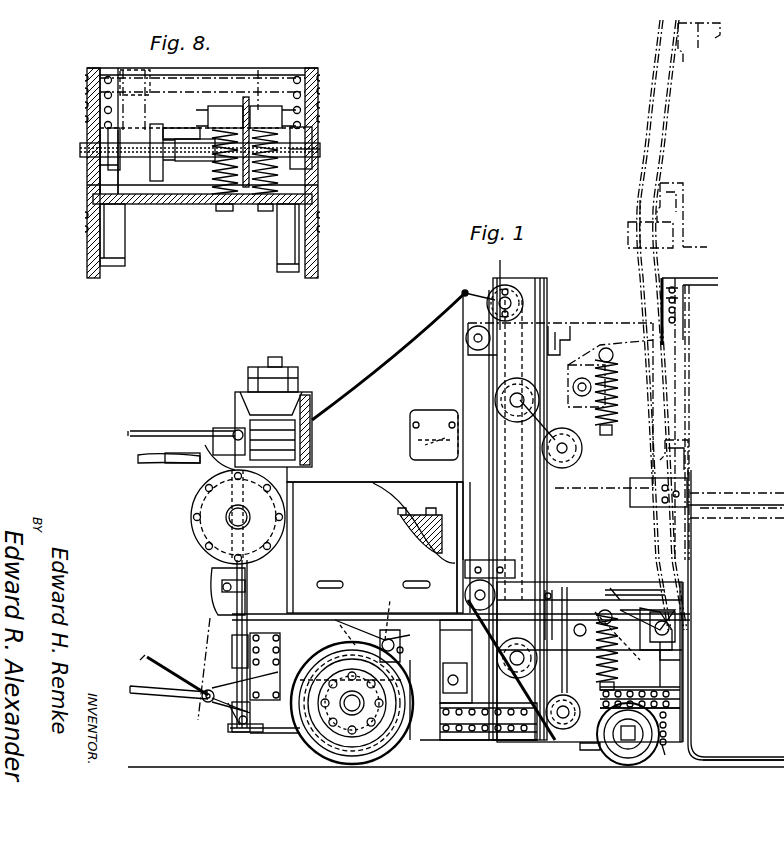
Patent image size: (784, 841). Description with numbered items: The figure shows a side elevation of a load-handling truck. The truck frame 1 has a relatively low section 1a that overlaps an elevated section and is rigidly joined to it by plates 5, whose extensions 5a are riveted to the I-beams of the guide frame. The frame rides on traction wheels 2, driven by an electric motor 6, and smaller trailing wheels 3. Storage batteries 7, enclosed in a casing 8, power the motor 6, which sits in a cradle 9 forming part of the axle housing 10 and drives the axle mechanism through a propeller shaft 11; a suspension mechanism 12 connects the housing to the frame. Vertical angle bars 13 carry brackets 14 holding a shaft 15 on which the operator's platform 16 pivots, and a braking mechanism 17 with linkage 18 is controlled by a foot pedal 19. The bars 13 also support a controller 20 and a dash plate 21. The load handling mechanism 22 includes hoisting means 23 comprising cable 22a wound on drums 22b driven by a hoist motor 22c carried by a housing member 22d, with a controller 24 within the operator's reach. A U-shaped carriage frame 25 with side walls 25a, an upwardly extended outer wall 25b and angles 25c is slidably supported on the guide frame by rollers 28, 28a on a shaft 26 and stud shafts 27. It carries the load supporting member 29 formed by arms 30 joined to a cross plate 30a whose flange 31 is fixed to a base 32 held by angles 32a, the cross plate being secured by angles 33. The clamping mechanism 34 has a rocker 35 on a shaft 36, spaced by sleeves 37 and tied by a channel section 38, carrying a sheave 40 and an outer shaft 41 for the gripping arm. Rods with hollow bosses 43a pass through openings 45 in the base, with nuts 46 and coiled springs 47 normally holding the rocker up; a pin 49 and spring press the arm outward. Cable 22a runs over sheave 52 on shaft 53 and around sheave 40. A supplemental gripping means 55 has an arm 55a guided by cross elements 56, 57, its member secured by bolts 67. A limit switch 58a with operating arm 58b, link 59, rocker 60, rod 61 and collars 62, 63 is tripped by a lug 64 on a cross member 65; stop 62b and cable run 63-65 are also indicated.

In FIG. 1, the frame 1 is at (400, 614).
In FIG. 1, the low frame section 1a is at (478, 748).
In FIG. 1, the traction wheels 2 is at (345, 767).
In FIG. 1, the trailing wheels 3 is at (628, 765).
In FIG. 1, the plates 5 is at (440, 620).
In FIG. 1, the plate extensions 5a is at (520, 565).
In FIG. 1, the motor 6 is at (399, 646).
In FIG. 1, the storage batteries 7 is at (412, 510).
In FIG. 1, the casing 8 is at (374, 495).
In FIG. 1, the cradle 9 is at (409, 709).
In FIG. 1, the axle housing 10 is at (305, 735).
In FIG. 1, the propeller shaft 11 is at (361, 703).
In FIG. 1, the suspension mechanism 12 is at (372, 608).
In FIG. 1, the angle bars 13 is at (290, 590).
In FIG. 1, the brackets 14 is at (265, 710).
In FIG. 1, the shaft 15 is at (203, 703).
In FIG. 1, the platform 16 is at (145, 694).
In FIG. 1, the braking mechanism 17 is at (290, 640).
In FIG. 1, the linkage 18 is at (237, 722).
In FIG. 1, the foot pedal 19 is at (170, 660).
In FIG. 1, the controller 20 is at (210, 585).
In FIG. 1, the dash plate 21 is at (300, 478).
In FIG. 1, the load handling mechanism 22 is at (312, 392).
In FIG. 1, the flexible member 22a is at (402, 352).
In FIG. 1, the drums 22b is at (190, 517).
In FIG. 1, the hoist motor 22c is at (305, 400).
In FIG. 1, the housing member 22d is at (215, 562).
In FIG. 1, the hoisting means 23 is at (695, 706).
In FIG. 1, the controller 24 is at (226, 428).
In FIG. 1, the frame 25 is at (690, 656).
In FIG. 8, the side walls 25a is at (338, 197).
In FIG. 1, the side walls 25a is at (600, 595).
In FIG. 1, the outer wall 25b is at (690, 625).
In FIG. 1, the angles 25c is at (700, 640).
In FIG. 8, the shaft 26 is at (86, 88).
In FIG. 1, the shaft 26 is at (455, 580).
In FIG. 1, the stud shafts 27 is at (550, 738).
In FIG. 1, the rollers 28 is at (490, 578).
In FIG. 8, the rollers 28a is at (118, 262).
In FIG. 1, the rollers 28a is at (488, 732).
In FIG. 1, the load supporting member 29 is at (730, 760).
In FIG. 1, the arms 30 is at (764, 760).
In FIG. 1, the cross plate 30a is at (698, 724).
In FIG. 1, the flange 31 is at (620, 655).
In FIG. 8, the base 32 is at (178, 204).
In FIG. 1, the base 32 is at (690, 678).
In FIG. 1, the angles 32a is at (692, 692).
In FIG. 1, the angles 33 is at (665, 758).
In FIG. 1, the load clamping mechanism 34 is at (655, 505).
In FIG. 8, the rocker 35 is at (148, 130).
In FIG. 1, the rocker 35 is at (609, 630).
In FIG. 8, the shaft 36 is at (82, 152).
In FIG. 1, the shaft 36 is at (566, 676).
In FIG. 8, the sleeves 37 is at (126, 160).
In FIG. 1, the channel section 38 is at (647, 633).
In FIG. 8, the sheave 40 is at (152, 204).
In FIG. 1, the sheave 40 is at (517, 649).
In FIG. 1, the shaft 41 is at (688, 610).
In FIG. 8, the hollow bosses 43a is at (228, 106).
In FIG. 8, the openings 45 is at (246, 204).
In FIG. 8, the nuts 46 is at (224, 212).
In FIG. 8, the coiled springs 47 is at (282, 176).
In FIG. 1, the pin 49 is at (635, 583).
In FIG. 1, the sheave 52 is at (520, 285).
In FIG. 1, the shaft 53 is at (497, 288).
In FIG. 1, the supplemental gripping means 55 is at (680, 322).
In FIG. 1, the arm 55a is at (676, 140).
In FIG. 1, the cross element 56 is at (628, 232).
In FIG. 1, the cross element 57 is at (684, 200).
In FIG. 1, the switch mechanism 58a is at (418, 410).
In FIG. 1, the operating arm 58b is at (410, 433).
In FIG. 1, the link 59 is at (462, 362).
In FIG. 1, the rocker 60 is at (475, 283).
In FIG. 1, the rod 61 is at (550, 312).
In FIG. 1, the collar 62 is at (553, 322).
In FIG. 1, the stop 62b is at (582, 752).
In FIG. 1, the collar 63 is at (236, 518).
In FIG. 1, the cable run 63-65 is at (600, 535).
In FIG. 8, the lug 64 is at (152, 70).
In FIG. 1, the lug 64 is at (145, 423).
In FIG. 1, the cross member 65 is at (572, 338).
In FIG. 1, the bolts 67 is at (680, 300).